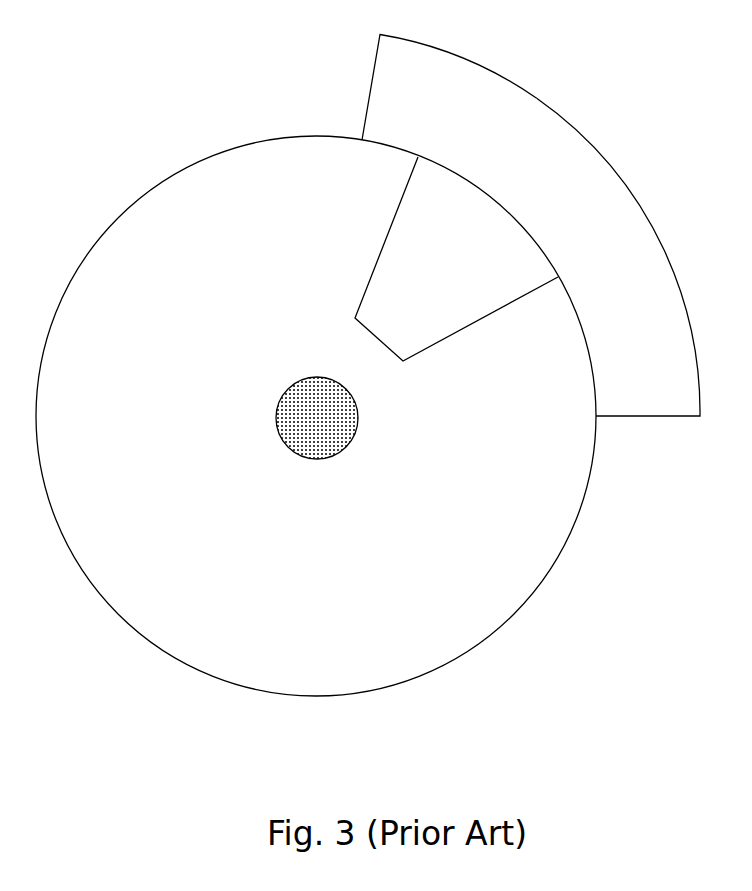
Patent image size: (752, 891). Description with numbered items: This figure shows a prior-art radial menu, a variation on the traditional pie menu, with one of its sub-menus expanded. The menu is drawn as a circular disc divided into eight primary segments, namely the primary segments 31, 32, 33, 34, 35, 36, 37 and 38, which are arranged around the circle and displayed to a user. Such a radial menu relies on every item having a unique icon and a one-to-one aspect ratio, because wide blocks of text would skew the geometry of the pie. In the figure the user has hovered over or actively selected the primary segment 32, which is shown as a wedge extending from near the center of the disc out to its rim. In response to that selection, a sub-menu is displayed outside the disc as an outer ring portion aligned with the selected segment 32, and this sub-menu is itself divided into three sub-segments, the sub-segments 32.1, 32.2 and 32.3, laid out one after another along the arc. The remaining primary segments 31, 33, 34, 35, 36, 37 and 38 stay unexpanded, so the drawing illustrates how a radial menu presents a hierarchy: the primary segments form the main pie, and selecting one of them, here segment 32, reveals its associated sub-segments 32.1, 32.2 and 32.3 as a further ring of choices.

The primary segment 31 is at (316, 416).
The primary segment 32 is at (456, 259).
The sub-segment 32.1 is at (449, 88).
The sub-segment 32.2 is at (590, 174).
The sub-segment 32.3 is at (648, 333).
The primary segment 33 is at (556, 419).
The primary segment 34 is at (488, 586).
The primary segment 35 is at (310, 662).
The primary segment 36 is at (150, 591).
The primary segment 37 is at (72, 419).
The primary segment 38 is at (143, 251).